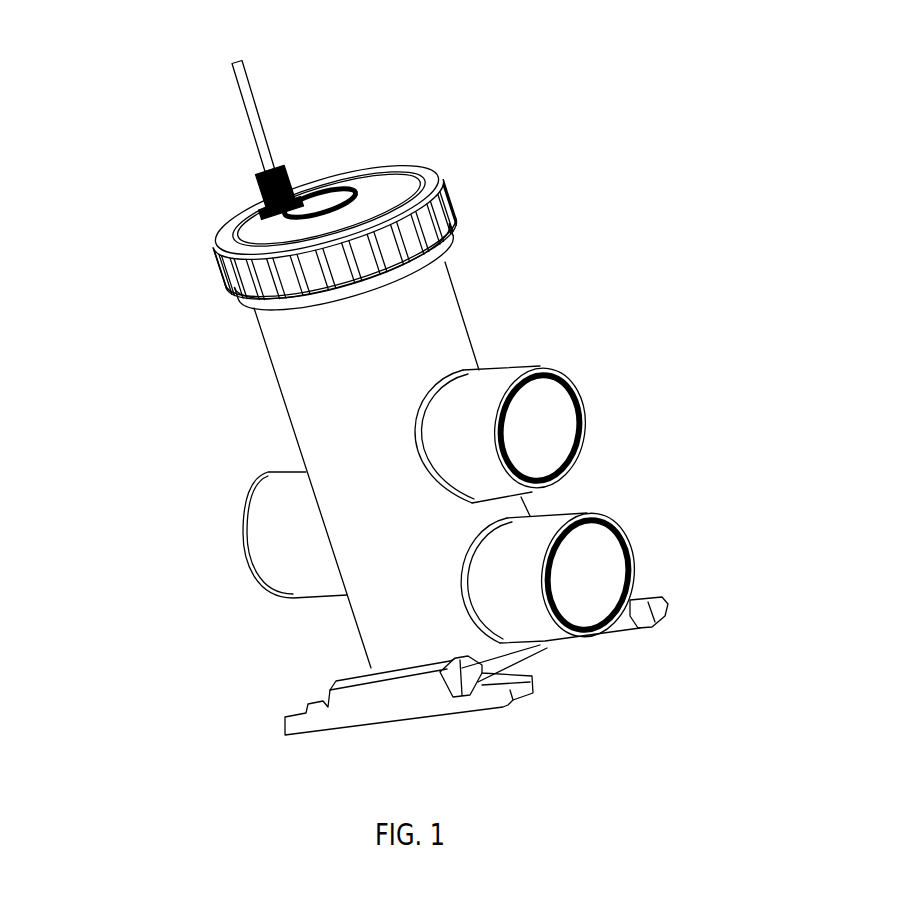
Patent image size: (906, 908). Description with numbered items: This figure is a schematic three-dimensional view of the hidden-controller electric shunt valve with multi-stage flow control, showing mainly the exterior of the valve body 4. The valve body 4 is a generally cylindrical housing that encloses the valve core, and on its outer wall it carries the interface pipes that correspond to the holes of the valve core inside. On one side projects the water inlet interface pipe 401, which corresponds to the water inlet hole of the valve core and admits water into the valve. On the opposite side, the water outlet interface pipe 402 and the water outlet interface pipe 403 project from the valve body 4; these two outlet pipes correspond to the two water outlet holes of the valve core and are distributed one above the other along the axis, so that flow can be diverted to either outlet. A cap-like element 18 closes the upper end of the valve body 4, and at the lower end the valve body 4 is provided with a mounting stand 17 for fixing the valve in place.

The valve body 4 is at (320, 392).
The cap 18 is at (427, 213).
The water inlet interface pipe 401 is at (292, 550).
The water outlet interface pipe 402 is at (553, 433).
The water outlet interface pipe 403 is at (593, 575).
The mounting stand 17 is at (410, 705).